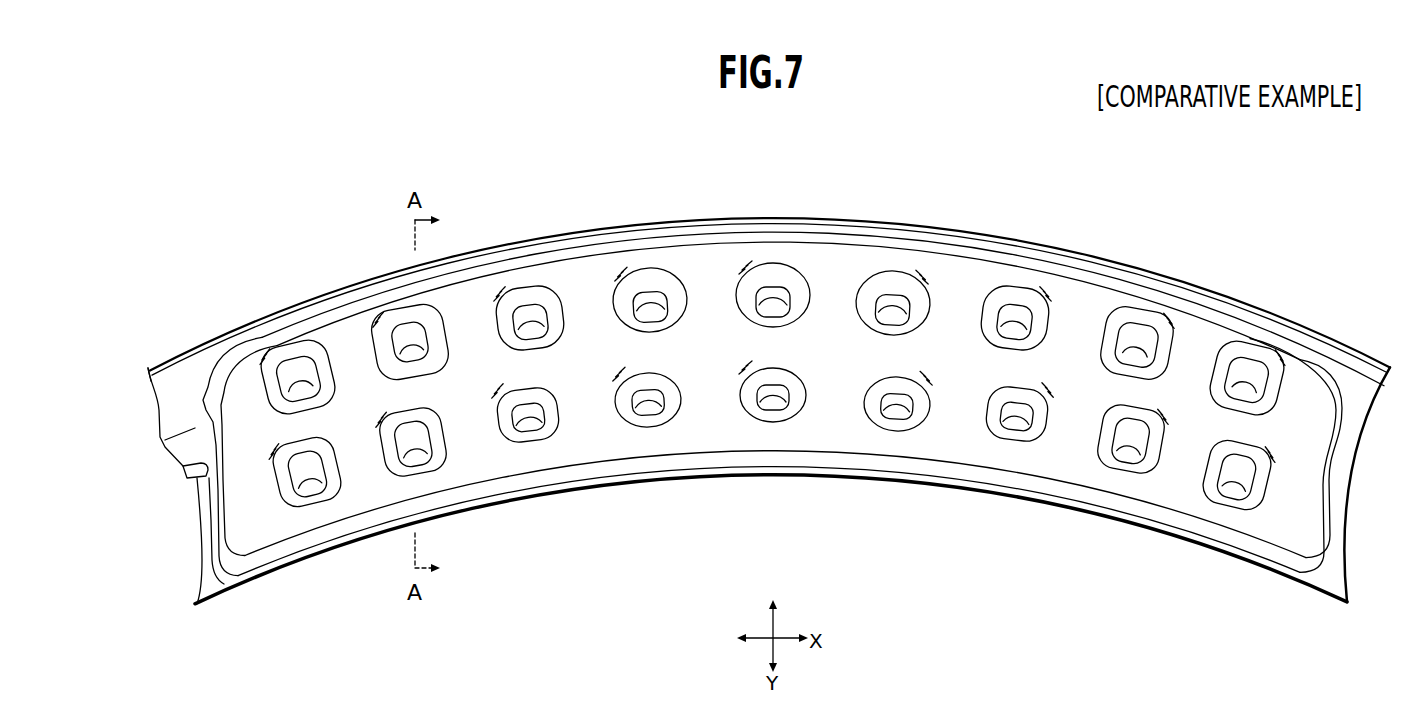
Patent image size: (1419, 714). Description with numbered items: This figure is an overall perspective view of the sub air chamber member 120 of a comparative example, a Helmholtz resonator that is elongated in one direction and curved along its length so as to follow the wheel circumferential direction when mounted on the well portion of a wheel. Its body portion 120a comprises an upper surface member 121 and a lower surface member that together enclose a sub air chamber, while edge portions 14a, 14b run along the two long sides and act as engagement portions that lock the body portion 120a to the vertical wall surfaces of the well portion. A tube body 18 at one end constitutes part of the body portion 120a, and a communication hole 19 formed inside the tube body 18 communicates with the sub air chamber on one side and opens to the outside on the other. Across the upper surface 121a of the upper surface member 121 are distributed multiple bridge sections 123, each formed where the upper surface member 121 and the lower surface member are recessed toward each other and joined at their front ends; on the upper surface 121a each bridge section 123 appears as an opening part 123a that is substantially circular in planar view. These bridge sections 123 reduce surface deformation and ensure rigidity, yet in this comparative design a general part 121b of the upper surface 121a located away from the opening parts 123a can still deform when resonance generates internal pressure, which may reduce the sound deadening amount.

The sub air chamber member 120 is at (763, 204).
The body portion 120a is at (490, 295).
The upper surface member 121 is at (809, 382).
The upper surface 121a is at (457, 300).
The general part 121b is at (474, 368).
The bridge section 123 is at (397, 354).
The opening part 123a is at (376, 337).
The tube body 18 is at (178, 380).
The communication hole 19 is at (159, 420).
The edge portion 14a is at (977, 484).
The edge portion 14b is at (1083, 254).